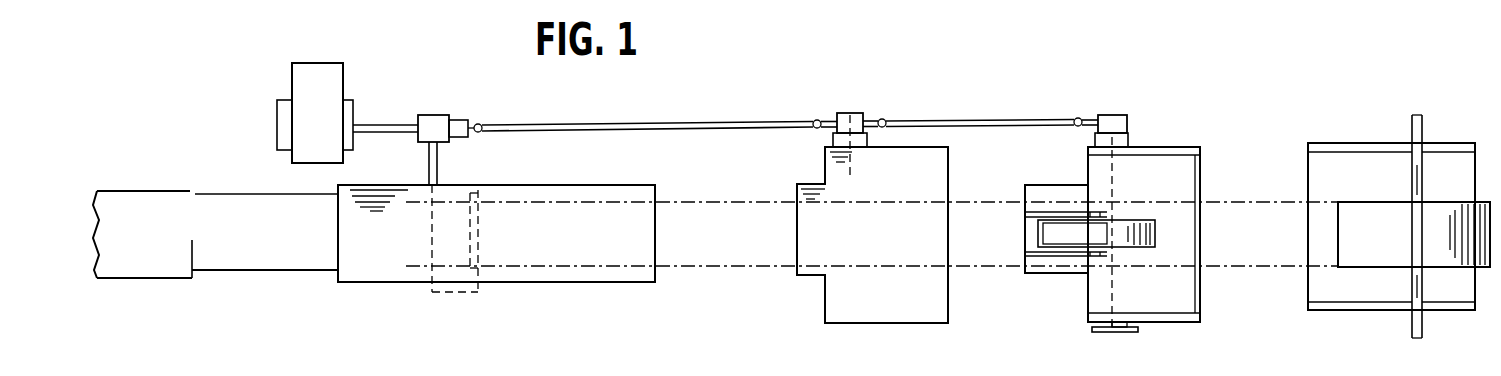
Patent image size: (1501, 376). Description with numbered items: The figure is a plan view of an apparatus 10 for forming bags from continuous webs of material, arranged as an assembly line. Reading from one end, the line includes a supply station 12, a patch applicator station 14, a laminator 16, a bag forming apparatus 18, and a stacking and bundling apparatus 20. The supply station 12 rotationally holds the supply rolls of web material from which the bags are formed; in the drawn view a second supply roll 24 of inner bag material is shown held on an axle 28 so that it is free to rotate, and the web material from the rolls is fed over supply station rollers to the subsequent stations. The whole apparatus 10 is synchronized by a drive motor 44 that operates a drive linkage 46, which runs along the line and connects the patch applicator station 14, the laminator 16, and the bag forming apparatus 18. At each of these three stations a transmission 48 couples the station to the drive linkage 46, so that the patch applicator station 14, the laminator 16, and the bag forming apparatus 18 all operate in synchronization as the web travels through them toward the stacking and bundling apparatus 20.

The apparatus 10 is at (1027, 83).
The supply station 12 is at (1464, 146).
The patch applicator station 14 is at (1182, 148).
The laminator 16 is at (943, 162).
The bag forming apparatus 18 is at (645, 185).
The stacking and bundling apparatus 20 is at (173, 196).
The second supply roll 24 is at (1350, 234).
The axle 28 is at (1422, 328).
The drive motor 44 is at (326, 67).
The drive linkage 46 is at (684, 124).
The transmission 48 is at (430, 116).